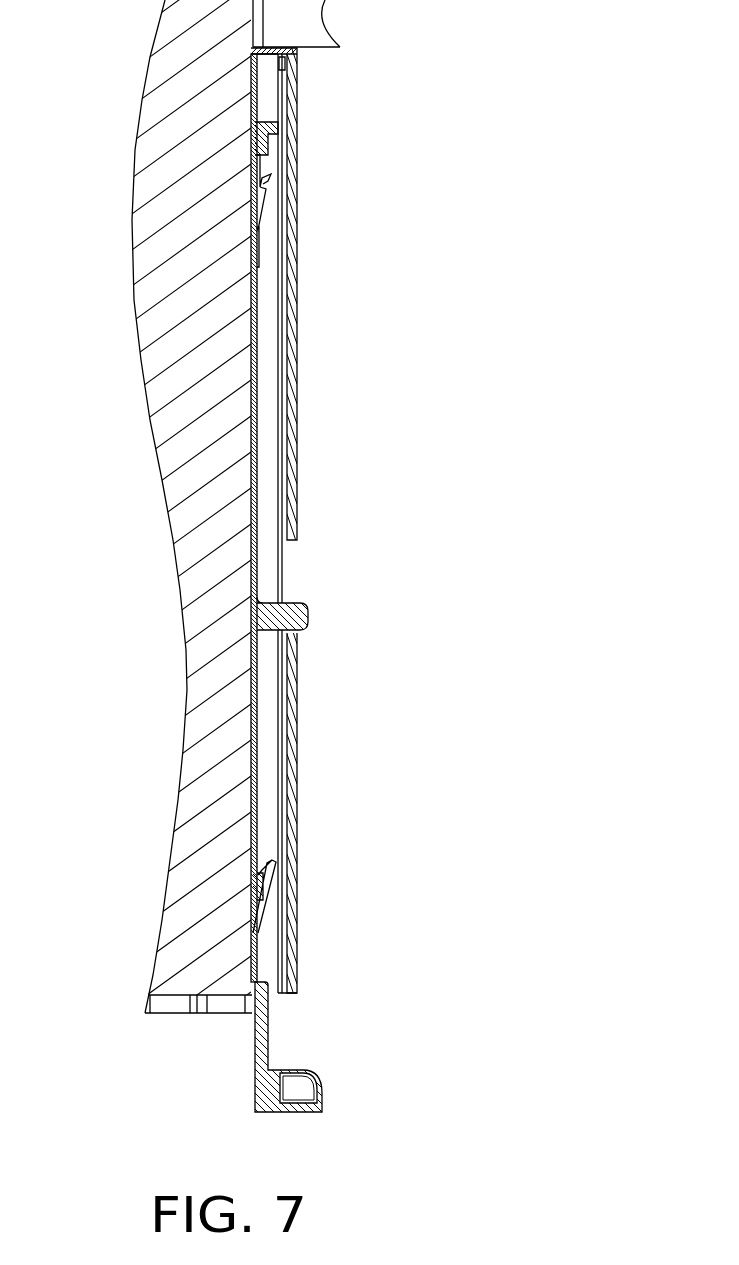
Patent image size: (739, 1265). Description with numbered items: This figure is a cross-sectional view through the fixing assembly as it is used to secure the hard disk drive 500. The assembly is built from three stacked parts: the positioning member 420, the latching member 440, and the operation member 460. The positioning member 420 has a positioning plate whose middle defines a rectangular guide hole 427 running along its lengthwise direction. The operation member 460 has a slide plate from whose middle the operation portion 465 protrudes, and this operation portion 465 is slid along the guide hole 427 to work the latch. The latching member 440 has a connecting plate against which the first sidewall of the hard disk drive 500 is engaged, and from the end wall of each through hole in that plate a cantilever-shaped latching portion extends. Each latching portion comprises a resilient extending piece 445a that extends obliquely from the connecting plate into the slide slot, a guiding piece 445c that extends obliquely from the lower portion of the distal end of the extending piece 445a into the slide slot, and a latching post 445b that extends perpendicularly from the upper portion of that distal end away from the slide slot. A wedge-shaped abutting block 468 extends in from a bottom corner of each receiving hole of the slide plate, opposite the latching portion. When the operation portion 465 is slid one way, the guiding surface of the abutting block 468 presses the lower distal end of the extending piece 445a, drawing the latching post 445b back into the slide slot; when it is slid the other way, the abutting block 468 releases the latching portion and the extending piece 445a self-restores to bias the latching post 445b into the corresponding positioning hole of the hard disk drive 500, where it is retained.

The hard disk drive 500 is at (168, 135).
The latching member 440 is at (250, 401).
The positioning member 420 is at (292, 152).
The operation member 460 is at (280, 372).
The guide hole 427 is at (287, 572).
The operation portion 465 is at (305, 610).
The abutting block 468 is at (260, 208).
The extending piece 445a is at (256, 233).
The latching post 445b is at (260, 193).
The guiding piece 445c is at (270, 177).